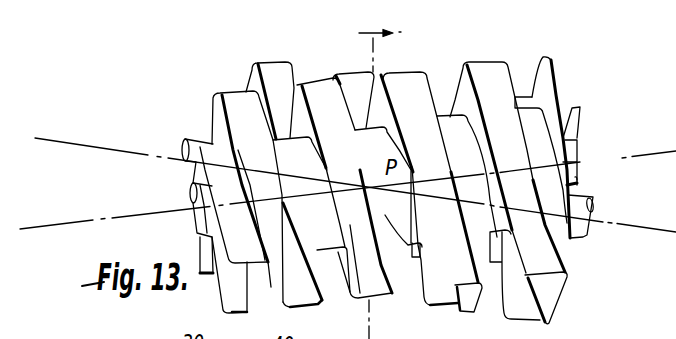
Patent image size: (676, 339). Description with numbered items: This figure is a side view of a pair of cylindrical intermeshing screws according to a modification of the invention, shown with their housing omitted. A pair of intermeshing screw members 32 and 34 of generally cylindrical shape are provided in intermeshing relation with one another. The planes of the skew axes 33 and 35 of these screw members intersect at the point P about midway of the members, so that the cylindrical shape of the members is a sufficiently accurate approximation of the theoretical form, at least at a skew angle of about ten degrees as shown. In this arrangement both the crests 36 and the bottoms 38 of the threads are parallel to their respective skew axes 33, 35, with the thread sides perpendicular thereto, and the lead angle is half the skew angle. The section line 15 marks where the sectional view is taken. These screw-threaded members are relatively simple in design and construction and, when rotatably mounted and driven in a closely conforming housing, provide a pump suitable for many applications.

The screw member 32 is at (493, 60).
The screw member 34 is at (282, 61).
The crests 36 is at (357, 78).
The bottoms 38 is at (443, 113).
The skew axis 33 is at (62, 226).
The skew axis 35 is at (105, 148).
The section line 15- 15 is at (383, 170).